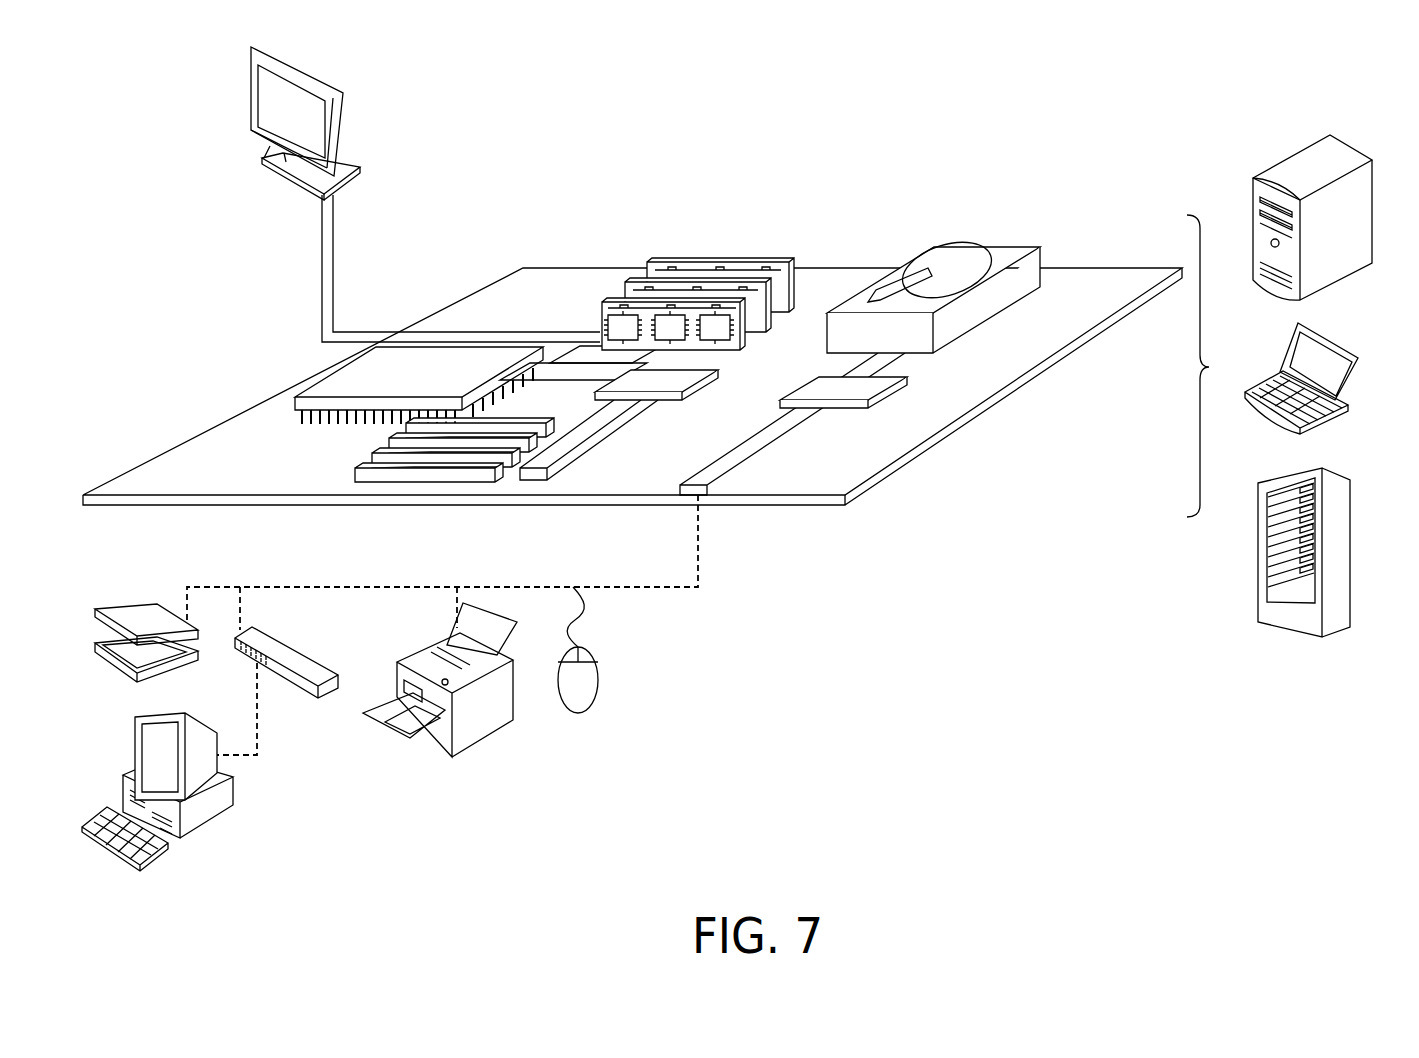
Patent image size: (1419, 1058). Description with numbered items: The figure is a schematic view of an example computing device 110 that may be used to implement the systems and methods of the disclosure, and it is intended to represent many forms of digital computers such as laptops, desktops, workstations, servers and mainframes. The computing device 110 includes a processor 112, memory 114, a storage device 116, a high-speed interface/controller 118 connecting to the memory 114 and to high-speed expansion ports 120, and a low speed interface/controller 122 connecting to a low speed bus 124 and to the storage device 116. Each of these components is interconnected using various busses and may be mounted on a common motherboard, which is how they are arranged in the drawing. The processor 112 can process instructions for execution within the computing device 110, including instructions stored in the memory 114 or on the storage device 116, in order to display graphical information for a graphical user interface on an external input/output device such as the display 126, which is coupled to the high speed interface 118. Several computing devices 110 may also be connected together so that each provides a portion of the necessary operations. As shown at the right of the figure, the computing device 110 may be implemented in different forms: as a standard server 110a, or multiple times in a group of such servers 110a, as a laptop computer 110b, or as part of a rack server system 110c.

The computing device 110 is at (798, 123).
The standard server 110a is at (1283, 157).
The laptop computer 110b is at (1338, 343).
The rack server system 110c is at (1348, 532).
The processor 112 is at (293, 397).
The memory 114 is at (718, 260).
The storage device 116 is at (985, 243).
The high-speed interface/controller 118 is at (662, 401).
The high-speed expansion ports 120 is at (354, 473).
The low speed interface/controller 122 is at (830, 380).
The low speed bus 124 is at (710, 490).
The display 126 is at (250, 99).